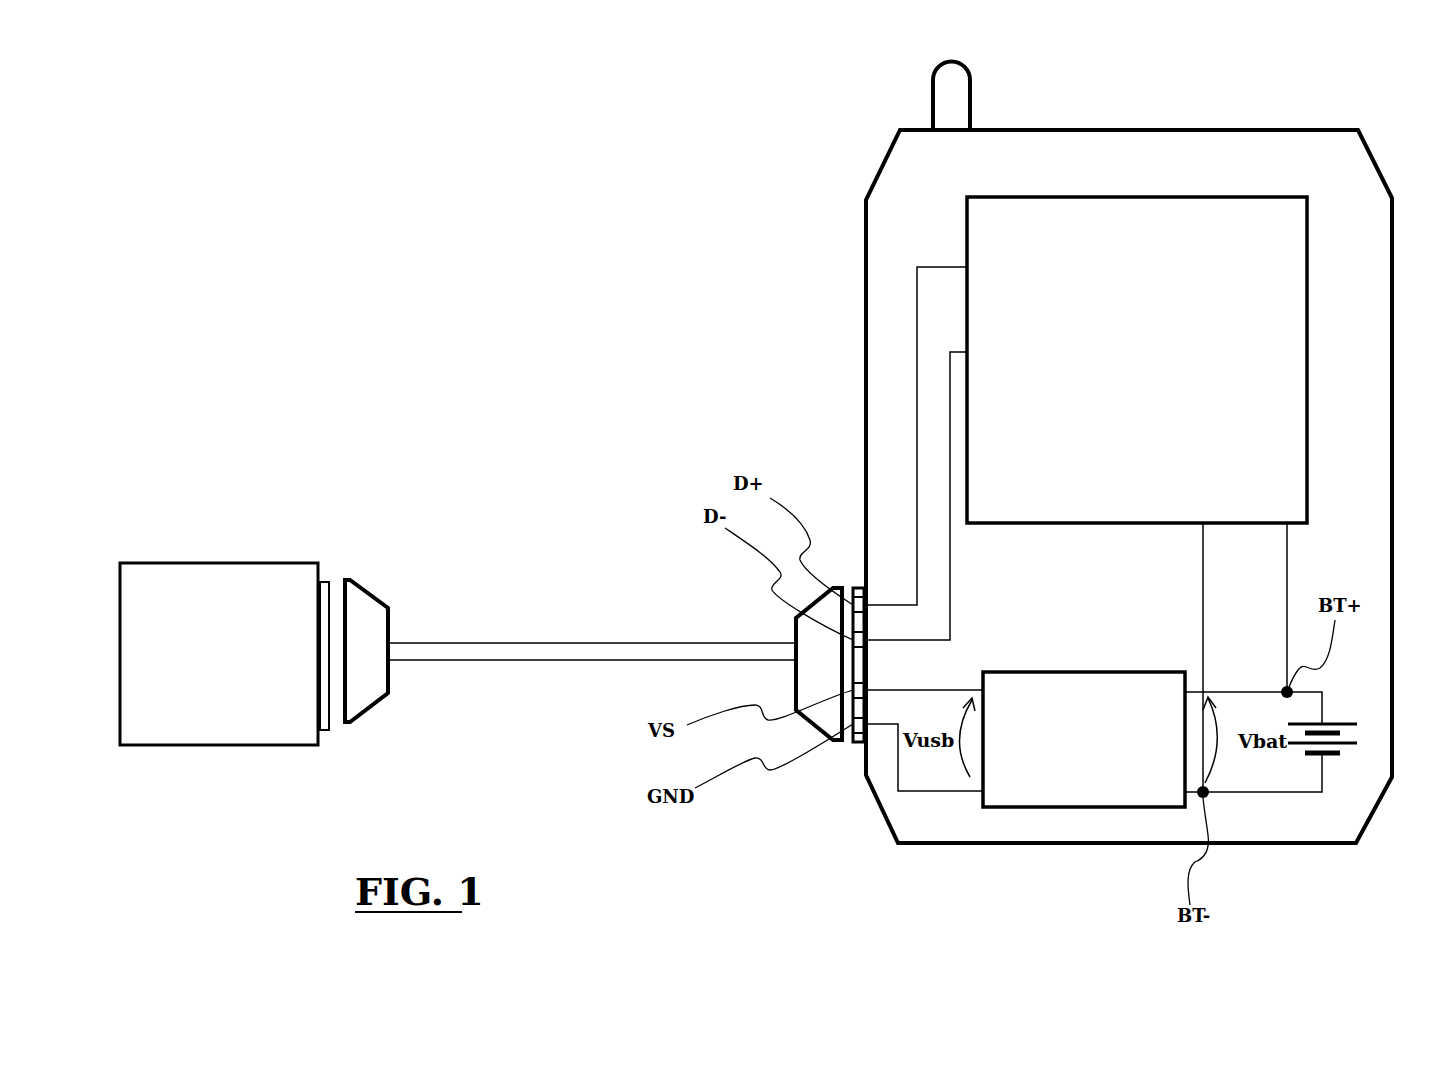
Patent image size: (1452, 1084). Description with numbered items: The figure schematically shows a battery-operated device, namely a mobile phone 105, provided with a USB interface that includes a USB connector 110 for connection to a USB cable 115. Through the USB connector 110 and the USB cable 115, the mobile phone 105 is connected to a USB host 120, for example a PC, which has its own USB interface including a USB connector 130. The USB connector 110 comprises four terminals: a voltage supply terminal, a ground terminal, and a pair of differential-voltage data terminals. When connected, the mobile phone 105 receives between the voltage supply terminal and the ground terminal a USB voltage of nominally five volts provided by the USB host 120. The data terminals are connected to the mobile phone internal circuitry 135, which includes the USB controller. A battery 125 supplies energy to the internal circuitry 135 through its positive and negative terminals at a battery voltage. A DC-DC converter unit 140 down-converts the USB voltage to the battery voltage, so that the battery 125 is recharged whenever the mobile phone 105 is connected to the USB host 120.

The mobile phone 105 is at (866, 267).
The USB connector 110 is at (860, 745).
The USB cable 115 is at (438, 643).
The USB host 120 is at (273, 563).
The battery 125 is at (1340, 755).
The USB connector 130 is at (322, 733).
The mobile phone internal circuitry 135 is at (1307, 255).
The DC-DC converter unit 140 is at (1028, 807).